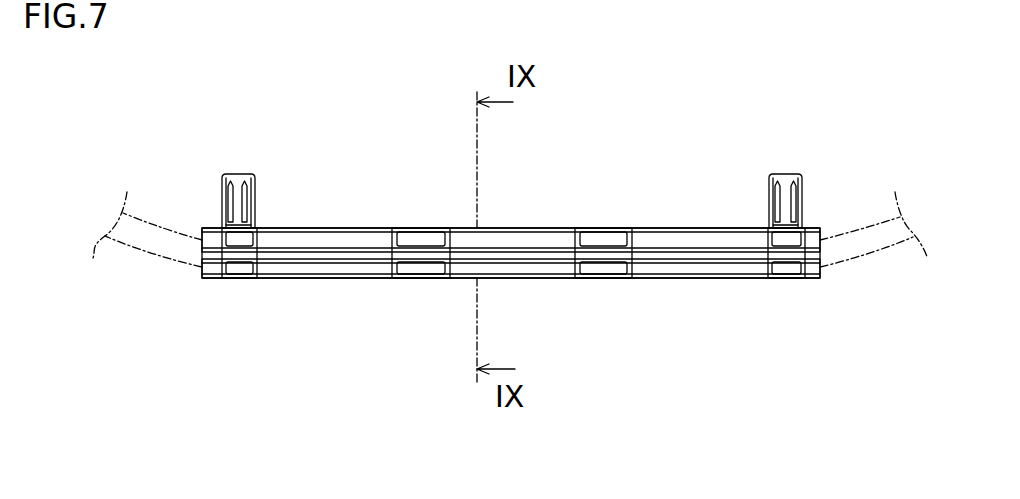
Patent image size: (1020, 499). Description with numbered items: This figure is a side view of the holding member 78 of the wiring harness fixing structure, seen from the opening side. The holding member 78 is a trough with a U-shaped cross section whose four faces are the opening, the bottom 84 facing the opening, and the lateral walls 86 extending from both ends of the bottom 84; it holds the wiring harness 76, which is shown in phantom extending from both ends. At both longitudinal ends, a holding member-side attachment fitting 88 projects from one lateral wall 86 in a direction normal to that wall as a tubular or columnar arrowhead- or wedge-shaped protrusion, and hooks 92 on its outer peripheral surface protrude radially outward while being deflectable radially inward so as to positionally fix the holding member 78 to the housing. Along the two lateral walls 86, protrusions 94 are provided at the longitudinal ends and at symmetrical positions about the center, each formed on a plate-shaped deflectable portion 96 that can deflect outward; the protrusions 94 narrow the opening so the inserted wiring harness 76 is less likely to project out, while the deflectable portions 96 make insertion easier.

The wiring harness 76 is at (860, 248).
The holding member 78 is at (650, 227).
The bottom 84 is at (688, 255).
The lateral walls 86 is at (521, 240).
The holding member-side attachment fitting 88 is at (252, 178).
The hook 92 is at (238, 205).
The protrusion 94 is at (235, 268).
The deflectable portion 96 is at (428, 238).